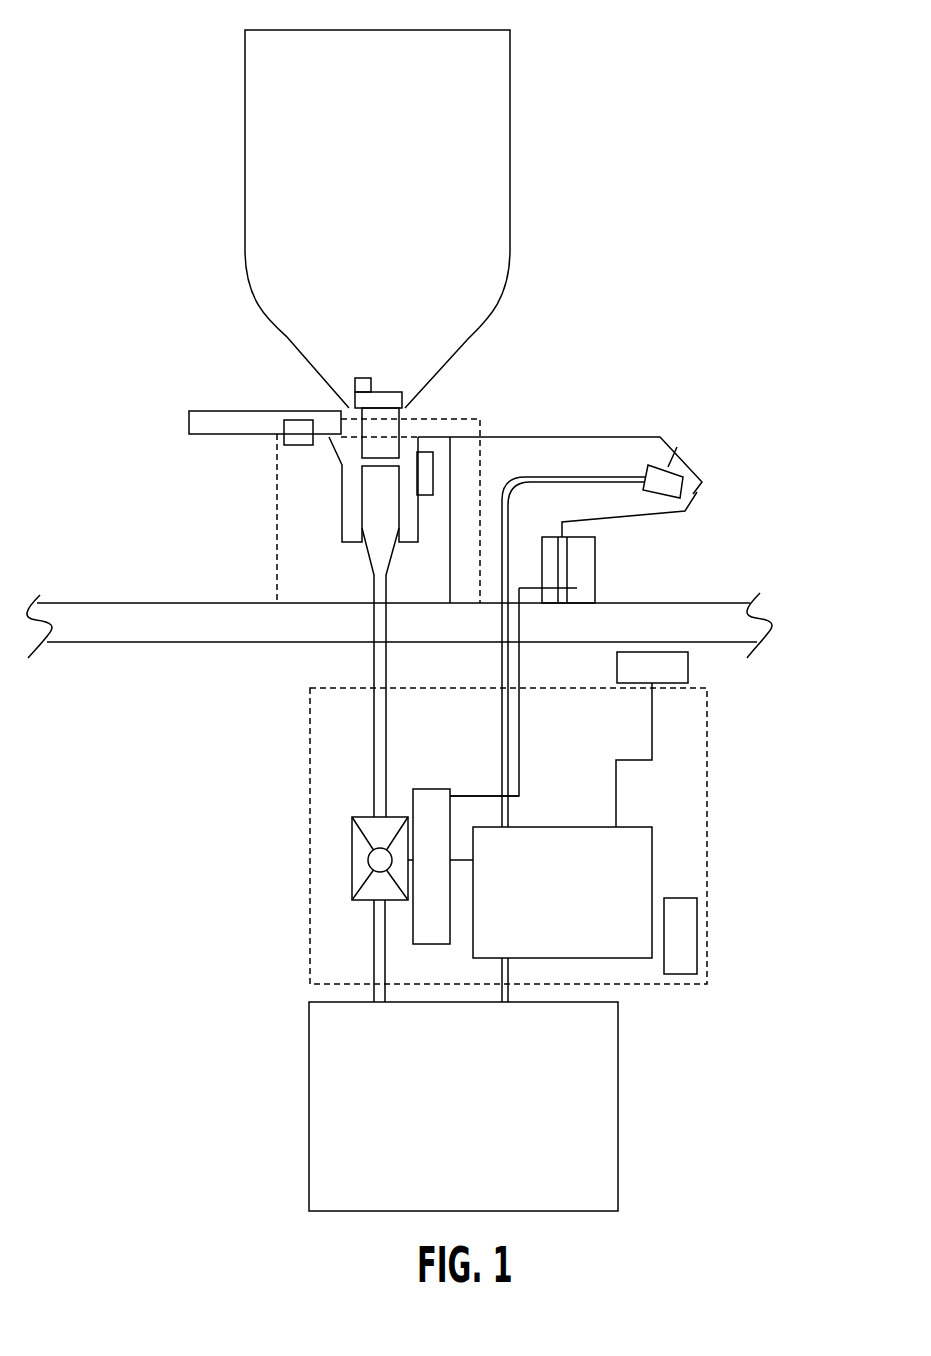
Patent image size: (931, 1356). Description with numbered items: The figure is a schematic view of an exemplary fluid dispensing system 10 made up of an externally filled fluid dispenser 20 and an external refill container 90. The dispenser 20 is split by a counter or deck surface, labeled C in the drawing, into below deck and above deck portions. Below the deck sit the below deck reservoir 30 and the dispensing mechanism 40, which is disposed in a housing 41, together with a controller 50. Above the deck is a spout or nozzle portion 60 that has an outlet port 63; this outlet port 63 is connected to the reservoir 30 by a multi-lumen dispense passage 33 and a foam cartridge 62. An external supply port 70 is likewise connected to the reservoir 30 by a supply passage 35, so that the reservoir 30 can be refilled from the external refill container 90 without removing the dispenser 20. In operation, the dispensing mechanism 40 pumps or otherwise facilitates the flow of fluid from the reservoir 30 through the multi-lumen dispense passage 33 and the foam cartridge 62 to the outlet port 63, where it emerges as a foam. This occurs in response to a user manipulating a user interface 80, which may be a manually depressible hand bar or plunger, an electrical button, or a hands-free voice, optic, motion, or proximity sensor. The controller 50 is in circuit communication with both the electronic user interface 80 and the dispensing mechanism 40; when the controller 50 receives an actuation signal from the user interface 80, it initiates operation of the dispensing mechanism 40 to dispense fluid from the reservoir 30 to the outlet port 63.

The fluid dispensing system 10 is at (131, 118).
The external refill container 90 is at (582, 89).
The external supply port 70 is at (407, 445).
The nozzle portion 60 is at (587, 439).
The foam cartridge 62 is at (677, 447).
The outlet port 63 is at (697, 492).
The user interface 80 is at (595, 560).
The fluid dispenser 20 is at (748, 565).
The conveyor / container C is at (728, 633).
The multi-lumen dispense passage 33 is at (507, 737).
The supply passage 35 is at (374, 773).
The controller 50 is at (415, 925).
The dispensing mechanism 40 is at (620, 870).
The housing 41 is at (707, 795).
The below deck reservoir 30 is at (585, 1075).